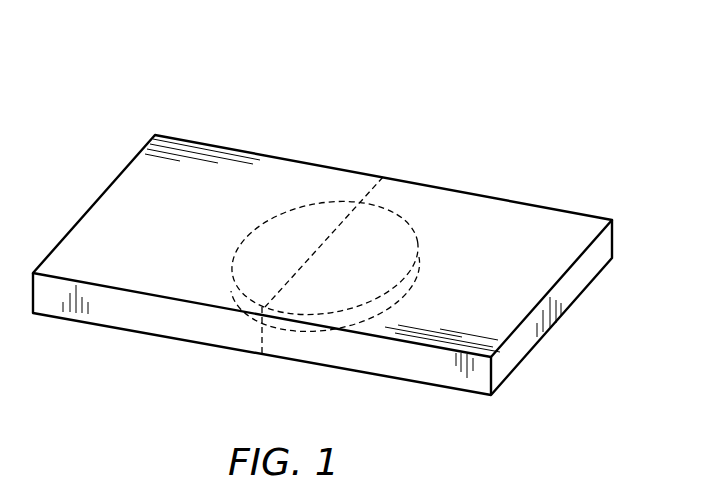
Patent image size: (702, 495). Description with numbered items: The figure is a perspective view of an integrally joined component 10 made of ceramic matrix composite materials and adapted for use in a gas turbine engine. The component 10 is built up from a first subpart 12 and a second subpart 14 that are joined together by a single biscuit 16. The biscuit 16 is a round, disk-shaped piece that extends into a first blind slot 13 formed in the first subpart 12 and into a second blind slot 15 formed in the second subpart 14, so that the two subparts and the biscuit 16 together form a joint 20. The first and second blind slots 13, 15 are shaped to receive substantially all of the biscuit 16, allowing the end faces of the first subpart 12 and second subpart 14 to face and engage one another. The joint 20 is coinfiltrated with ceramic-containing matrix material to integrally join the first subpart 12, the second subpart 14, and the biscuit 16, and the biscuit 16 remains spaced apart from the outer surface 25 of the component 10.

The integrally joined component 10 is at (462, 66).
The first subpart 12 is at (193, 128).
The first blind slot 13 is at (218, 293).
The second subpart 14 is at (553, 194).
The second blind slot 15 is at (361, 330).
The biscuit 16 is at (395, 198).
The joint 20 is at (342, 185).
The outer surface 25 is at (275, 180).